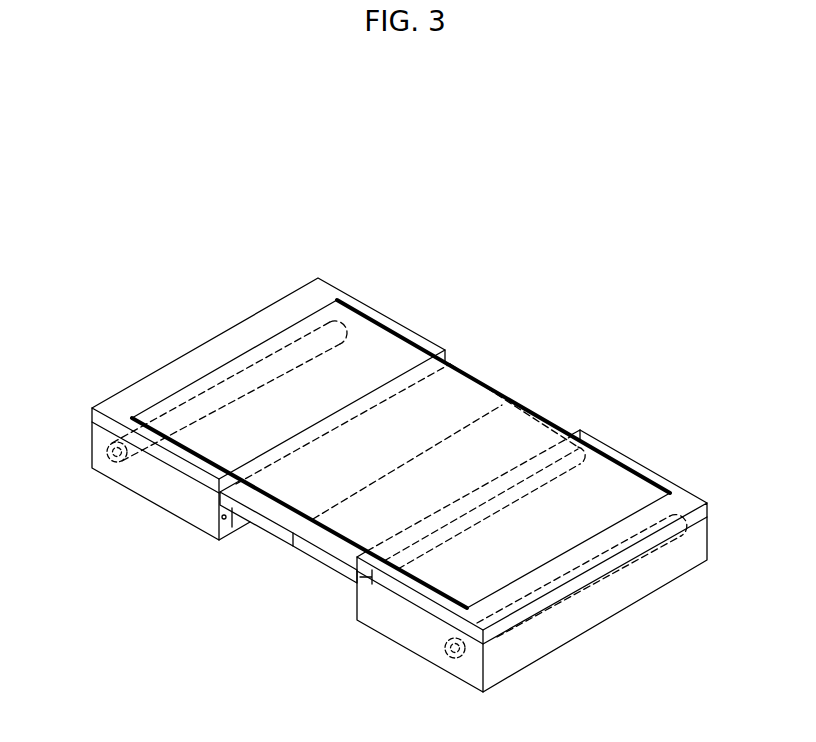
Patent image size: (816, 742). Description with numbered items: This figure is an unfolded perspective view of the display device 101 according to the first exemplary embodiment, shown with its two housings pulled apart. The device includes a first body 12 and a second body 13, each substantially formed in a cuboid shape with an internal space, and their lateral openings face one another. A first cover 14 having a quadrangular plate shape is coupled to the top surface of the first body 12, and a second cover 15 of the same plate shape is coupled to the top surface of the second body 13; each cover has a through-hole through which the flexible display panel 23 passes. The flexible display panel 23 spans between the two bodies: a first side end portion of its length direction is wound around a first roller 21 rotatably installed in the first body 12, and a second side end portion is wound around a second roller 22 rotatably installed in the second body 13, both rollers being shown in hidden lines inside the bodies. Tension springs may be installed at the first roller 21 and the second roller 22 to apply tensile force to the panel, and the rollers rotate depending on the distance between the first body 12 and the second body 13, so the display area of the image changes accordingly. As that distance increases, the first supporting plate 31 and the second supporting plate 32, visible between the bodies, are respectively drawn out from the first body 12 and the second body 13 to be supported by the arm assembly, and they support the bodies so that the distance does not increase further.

The display device 101 is at (514, 273).
The first body 12 is at (187, 510).
The second body 13 is at (423, 637).
The first cover 14 is at (180, 451).
The second cover 15 is at (410, 588).
The first roller 21 is at (106, 455).
The second roller 22 is at (456, 662).
The flexible display panel 23 is at (606, 476).
The first supporting plate 31 is at (270, 518).
The second supporting plate 32 is at (330, 560).